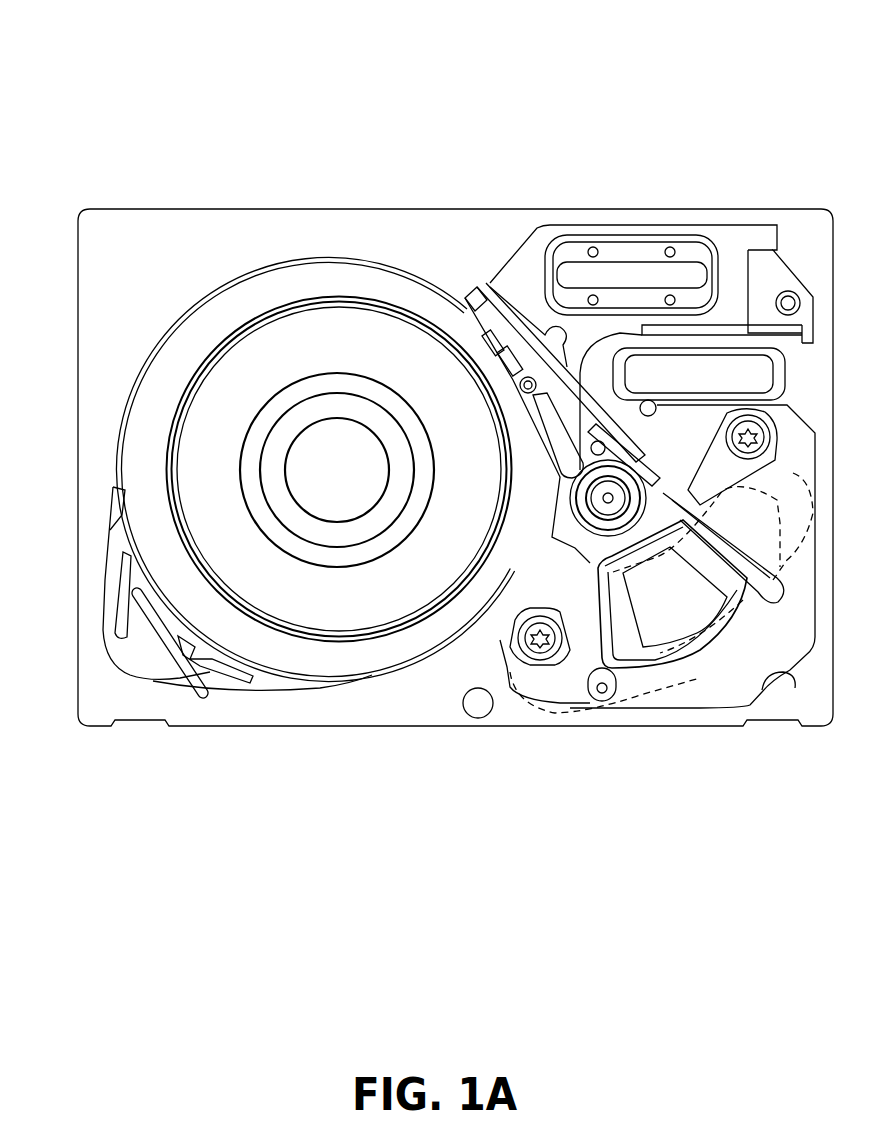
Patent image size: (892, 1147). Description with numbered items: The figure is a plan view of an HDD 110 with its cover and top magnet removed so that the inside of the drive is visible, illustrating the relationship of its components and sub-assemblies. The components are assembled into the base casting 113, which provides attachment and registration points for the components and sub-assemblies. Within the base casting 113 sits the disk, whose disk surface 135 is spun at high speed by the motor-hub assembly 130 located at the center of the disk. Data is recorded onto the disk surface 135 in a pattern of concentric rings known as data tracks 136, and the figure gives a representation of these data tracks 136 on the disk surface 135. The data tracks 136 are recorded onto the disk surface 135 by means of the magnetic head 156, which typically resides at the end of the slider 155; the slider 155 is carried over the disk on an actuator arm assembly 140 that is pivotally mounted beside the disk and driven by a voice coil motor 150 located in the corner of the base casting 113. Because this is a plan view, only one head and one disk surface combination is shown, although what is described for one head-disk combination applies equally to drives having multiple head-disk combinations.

The HDD 110 is at (162, 145).
The base casting 113 is at (100, 425).
The motor-hub assembly 130 is at (335, 460).
The disk surface 135 is at (267, 297).
The data tracks 136 is at (172, 523).
The actuator arm assembly 140 is at (607, 518).
The voice coil motor 150 is at (677, 670).
The slider 155 is at (477, 288).
The magnetic head 156 is at (473, 290).